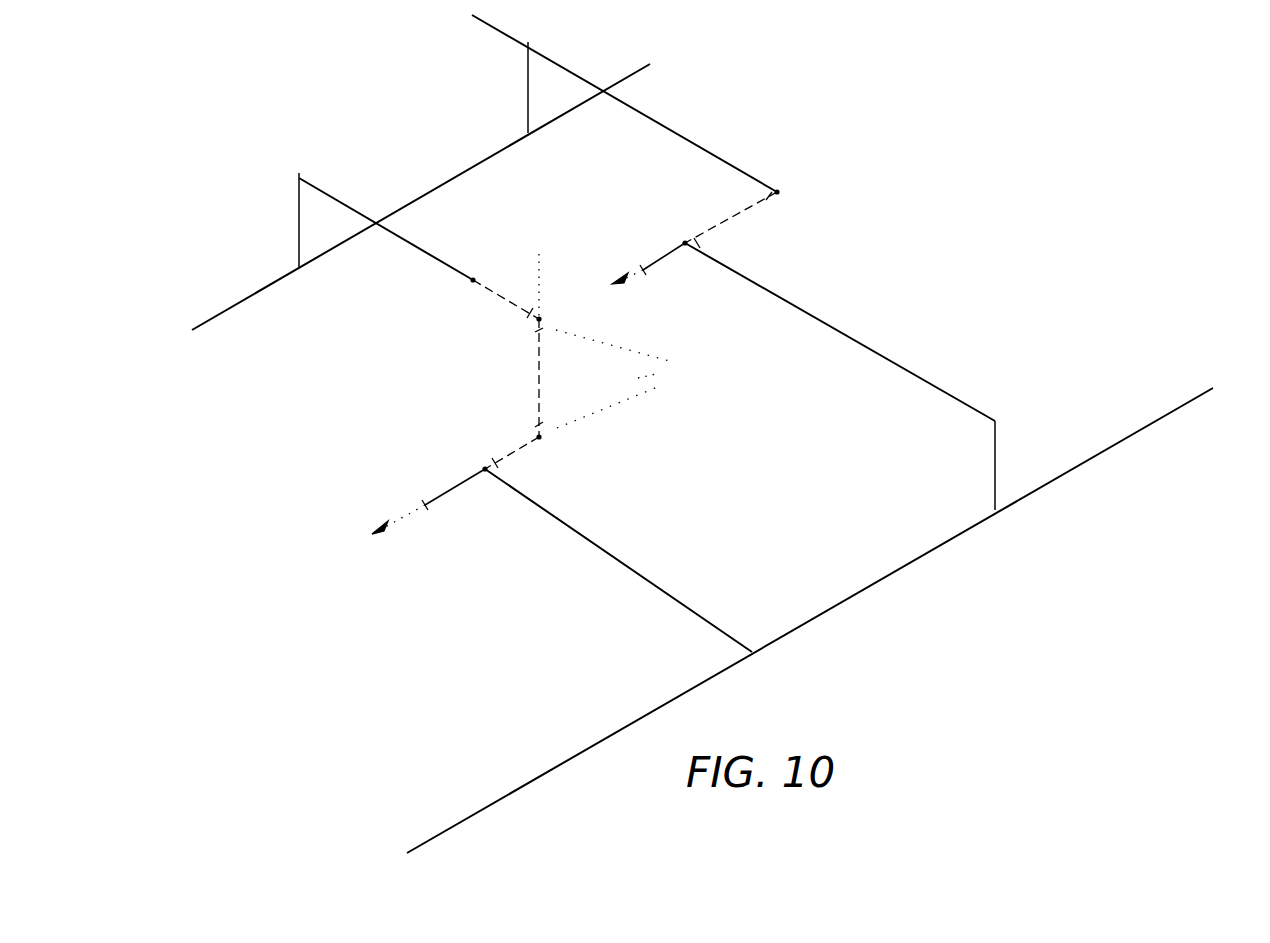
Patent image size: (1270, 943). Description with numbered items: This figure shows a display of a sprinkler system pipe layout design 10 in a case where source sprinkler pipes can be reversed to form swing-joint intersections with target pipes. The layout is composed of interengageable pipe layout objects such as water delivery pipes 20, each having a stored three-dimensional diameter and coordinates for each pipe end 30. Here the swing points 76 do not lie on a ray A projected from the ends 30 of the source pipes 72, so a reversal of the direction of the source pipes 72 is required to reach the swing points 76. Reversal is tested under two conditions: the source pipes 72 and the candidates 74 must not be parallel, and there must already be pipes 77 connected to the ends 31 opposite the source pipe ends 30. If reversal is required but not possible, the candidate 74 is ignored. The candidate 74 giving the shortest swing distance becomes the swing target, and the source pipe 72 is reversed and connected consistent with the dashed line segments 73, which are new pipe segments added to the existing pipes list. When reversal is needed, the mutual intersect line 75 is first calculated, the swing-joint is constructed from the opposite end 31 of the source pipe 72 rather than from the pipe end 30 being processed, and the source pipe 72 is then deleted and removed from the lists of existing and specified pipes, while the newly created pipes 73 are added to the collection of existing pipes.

The sprinkler system pipe layout design 10 is at (1088, 521).
The water delivery pipe 20 is at (272, 282).
The pipe end 30 is at (472, 282).
The opposite end 31 is at (484, 477).
The source pipe 72 is at (455, 486).
The dashed line segment 73 is at (500, 298).
The candidate 74 is at (463, 273).
The mutual intersect line 75 is at (540, 265).
The swing point 76 is at (544, 318).
The connected pipe 77 is at (633, 572).